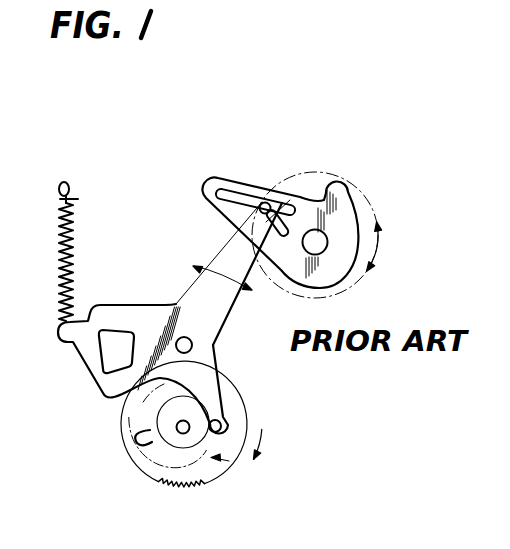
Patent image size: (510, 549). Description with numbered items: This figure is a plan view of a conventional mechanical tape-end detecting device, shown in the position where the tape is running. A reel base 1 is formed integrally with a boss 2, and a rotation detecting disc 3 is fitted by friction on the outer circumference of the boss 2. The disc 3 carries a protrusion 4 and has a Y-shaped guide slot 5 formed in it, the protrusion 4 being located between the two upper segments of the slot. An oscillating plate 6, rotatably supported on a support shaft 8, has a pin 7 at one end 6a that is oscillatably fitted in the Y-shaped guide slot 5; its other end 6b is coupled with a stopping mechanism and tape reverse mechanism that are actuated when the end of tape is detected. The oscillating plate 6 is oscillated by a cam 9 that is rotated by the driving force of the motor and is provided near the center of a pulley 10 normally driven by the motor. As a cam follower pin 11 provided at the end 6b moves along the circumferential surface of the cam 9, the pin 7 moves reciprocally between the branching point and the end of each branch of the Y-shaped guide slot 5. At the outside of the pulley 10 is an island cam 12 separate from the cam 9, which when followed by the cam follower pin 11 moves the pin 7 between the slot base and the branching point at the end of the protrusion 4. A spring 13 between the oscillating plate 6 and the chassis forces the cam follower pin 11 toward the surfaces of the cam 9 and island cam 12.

The reel base 1 is at (300, 178).
The boss 2 is at (318, 247).
The rotation detecting disc 3 is at (337, 200).
The protrusion 4 is at (290, 200).
The Y-shaped guide slot 5 is at (223, 190).
The oscillating plate 6 is at (146, 318).
The one end of oscillating plate 6a is at (232, 250).
The other end of oscillating plate 6b is at (203, 388).
The pin 7 is at (264, 200).
The support shaft 8 is at (195, 344).
The cam 9 is at (205, 437).
The pulley 10 is at (222, 467).
The cam follower pin 11 is at (222, 421).
The island cam 12 is at (140, 422).
The spring 13 is at (77, 245).